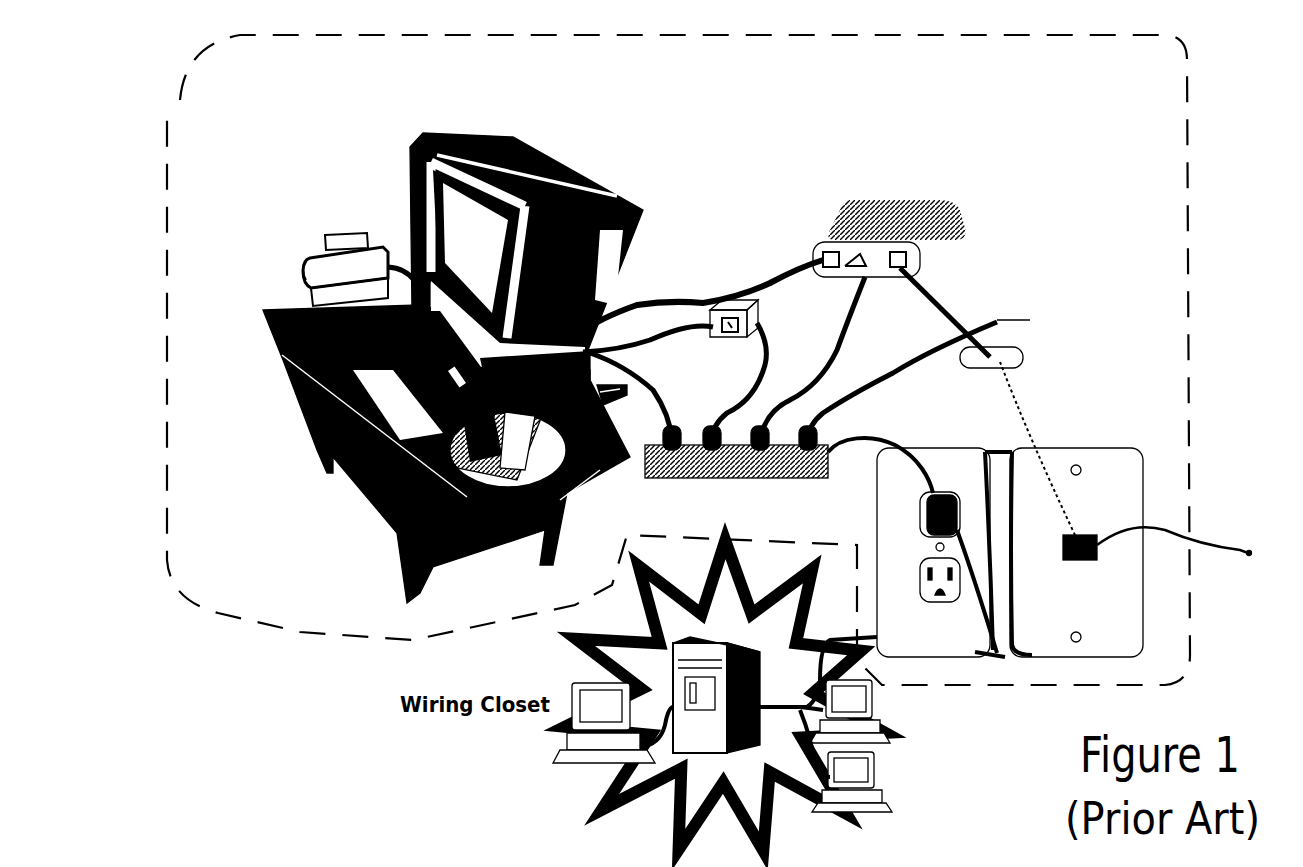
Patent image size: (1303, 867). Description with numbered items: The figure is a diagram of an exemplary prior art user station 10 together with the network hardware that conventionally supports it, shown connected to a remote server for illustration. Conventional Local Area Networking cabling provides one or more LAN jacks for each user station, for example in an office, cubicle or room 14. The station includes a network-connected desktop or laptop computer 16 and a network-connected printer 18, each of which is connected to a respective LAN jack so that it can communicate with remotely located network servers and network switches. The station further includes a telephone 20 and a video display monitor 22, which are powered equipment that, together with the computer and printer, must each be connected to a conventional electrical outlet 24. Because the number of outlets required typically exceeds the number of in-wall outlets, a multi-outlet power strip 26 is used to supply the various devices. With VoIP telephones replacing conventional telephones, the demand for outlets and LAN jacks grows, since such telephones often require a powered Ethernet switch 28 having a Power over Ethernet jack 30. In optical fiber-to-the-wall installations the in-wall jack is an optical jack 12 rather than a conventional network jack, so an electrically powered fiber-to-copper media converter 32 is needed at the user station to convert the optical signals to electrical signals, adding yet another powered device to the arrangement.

The user station 10 is at (1176, 334).
The optical jack 12 is at (1193, 545).
The office, cubicle, room 14 is at (1194, 373).
The computer 16 is at (594, 154).
The printer 18 is at (337, 253).
The telephone 20 is at (524, 543).
The video display monitor 22 is at (489, 150).
The electrical outlet 24 is at (1003, 662).
The multi-outlet power strip 26 is at (740, 478).
The powered Ethernet switch 28 is at (952, 212).
The Power over Ethernet jack 30 is at (734, 310).
The fiber-to-copper media converter 32 is at (1033, 337).